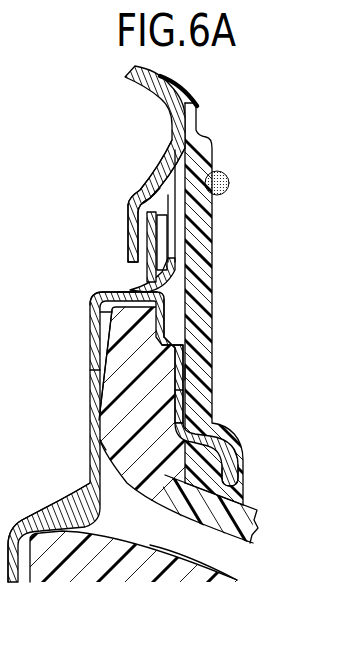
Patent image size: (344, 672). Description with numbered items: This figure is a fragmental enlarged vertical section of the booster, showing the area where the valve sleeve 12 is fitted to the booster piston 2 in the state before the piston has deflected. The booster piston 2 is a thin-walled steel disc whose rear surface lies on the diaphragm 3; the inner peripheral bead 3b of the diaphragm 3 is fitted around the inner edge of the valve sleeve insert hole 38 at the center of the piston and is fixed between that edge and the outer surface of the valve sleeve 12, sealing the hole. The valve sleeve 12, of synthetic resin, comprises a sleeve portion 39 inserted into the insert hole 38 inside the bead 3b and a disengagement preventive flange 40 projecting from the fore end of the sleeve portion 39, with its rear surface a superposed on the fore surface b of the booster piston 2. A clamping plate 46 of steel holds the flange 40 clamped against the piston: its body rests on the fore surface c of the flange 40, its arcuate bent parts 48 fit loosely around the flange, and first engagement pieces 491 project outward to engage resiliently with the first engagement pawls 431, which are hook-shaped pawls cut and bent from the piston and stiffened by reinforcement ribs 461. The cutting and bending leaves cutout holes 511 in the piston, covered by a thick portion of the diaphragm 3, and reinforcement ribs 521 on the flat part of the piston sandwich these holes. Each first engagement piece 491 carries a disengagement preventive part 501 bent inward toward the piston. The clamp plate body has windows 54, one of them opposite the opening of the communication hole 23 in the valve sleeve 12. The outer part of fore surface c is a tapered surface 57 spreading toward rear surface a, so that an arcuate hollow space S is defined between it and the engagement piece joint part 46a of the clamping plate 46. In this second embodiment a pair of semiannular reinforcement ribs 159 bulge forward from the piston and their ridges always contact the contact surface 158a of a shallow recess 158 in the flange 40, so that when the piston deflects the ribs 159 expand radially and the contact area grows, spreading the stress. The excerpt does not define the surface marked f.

The booster piston 2 is at (169, 112).
The diaphragm 3 is at (184, 94).
The valve sleeve 12 is at (92, 585).
The communication hole 23 is at (170, 558).
The valve sleeve insert hole 38 is at (240, 477).
The sleeve portion 39 is at (247, 527).
The inner peripheral bead 3b is at (235, 493).
The disengagement preventive flange 40 is at (90, 405).
The clamping plate 46 is at (87, 431).
The engagement piece joint part 46a is at (92, 305).
The arcuate bent parts 48 is at (127, 288).
The windows 54 is at (87, 487).
The tapered surface 57 is at (109, 353).
The recess 158 is at (167, 349).
The contact surface 158a is at (140, 275).
The reinforcement ribs 159 is at (172, 310).
The first engagement pawls 431 is at (125, 221).
The reinforcement ribs 461 is at (147, 195).
The first engagement pieces 491 is at (180, 263).
The disengagement preventive part 501 is at (166, 242).
The cutout holes 511 is at (183, 210).
The reinforcement ribs 521 is at (160, 214).
The arcuate hollow space S is at (107, 320).
The rear surface a is at (178, 396).
The fore surface b is at (177, 373).
The fore surface c is at (100, 438).
The sleeve wall f is at (88, 378).